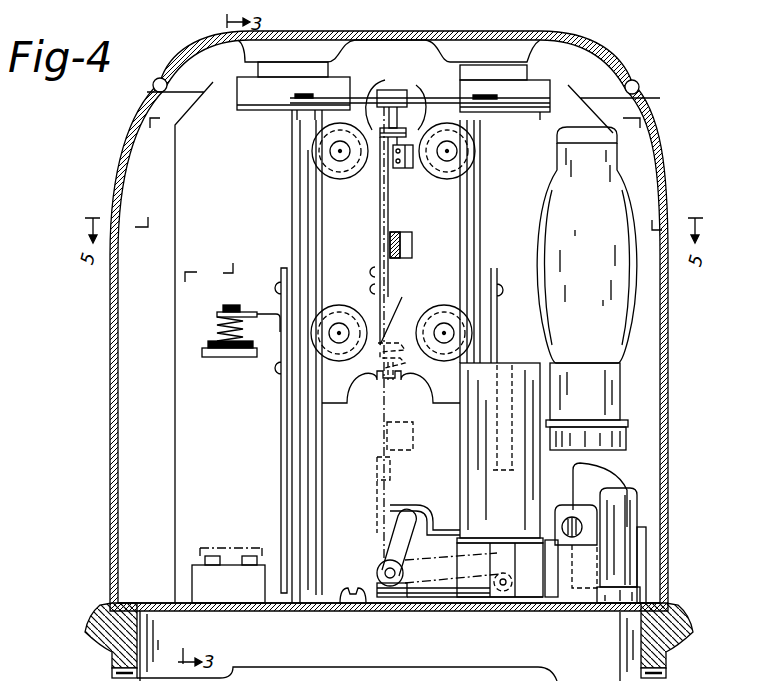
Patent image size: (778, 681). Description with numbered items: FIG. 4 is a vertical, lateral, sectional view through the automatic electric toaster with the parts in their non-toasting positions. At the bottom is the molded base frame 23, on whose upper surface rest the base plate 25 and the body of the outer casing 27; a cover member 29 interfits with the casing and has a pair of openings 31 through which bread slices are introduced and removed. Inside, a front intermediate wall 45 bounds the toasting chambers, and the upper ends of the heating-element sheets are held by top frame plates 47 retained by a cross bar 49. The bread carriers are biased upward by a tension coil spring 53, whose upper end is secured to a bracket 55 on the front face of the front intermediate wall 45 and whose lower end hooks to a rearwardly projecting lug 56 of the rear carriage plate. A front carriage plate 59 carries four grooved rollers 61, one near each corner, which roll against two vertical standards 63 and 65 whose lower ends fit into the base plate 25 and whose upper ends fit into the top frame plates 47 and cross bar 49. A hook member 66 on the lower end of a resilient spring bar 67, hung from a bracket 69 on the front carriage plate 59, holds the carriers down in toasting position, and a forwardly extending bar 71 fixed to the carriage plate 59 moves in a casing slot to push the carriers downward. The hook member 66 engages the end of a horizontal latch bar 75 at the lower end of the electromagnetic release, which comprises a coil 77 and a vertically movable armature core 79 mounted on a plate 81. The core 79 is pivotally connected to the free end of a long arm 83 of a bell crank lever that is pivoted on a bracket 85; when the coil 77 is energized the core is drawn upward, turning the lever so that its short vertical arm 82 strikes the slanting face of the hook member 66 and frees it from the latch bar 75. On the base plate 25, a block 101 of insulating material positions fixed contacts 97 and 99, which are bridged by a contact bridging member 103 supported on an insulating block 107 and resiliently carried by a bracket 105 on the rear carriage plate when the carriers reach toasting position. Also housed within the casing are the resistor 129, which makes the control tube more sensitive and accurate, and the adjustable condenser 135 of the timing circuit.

The base frame 23 is at (670, 660).
The base plate 25 is at (265, 606).
The outer casing 27 is at (110, 368).
The cover member 29 is at (638, 81).
The openings 31 is at (242, 47).
The front intermediate wall 45 is at (175, 438).
The top frame plates 47 is at (240, 112).
The cross bar 49 is at (367, 95).
The tension coil spring 53 is at (416, 105).
The bracket 55 is at (370, 106).
The lug 56 is at (380, 389).
The front carriage plate 59 is at (343, 405).
The grooved rollers 61 is at (312, 152).
The standard 63 is at (290, 222).
The standard 65 is at (484, 201).
The hook member 66 is at (395, 325).
The spring bar 67 is at (380, 206).
The bracket 69 is at (405, 168).
The forwardly extending bar 71 is at (413, 242).
The latch bar 75 is at (420, 517).
The coil 77 is at (460, 473).
The armature core 79 is at (507, 567).
The plate 81 is at (447, 598).
The short vertical arm 82 is at (383, 553).
The long arm 83 is at (425, 590).
The bracket 85 is at (377, 578).
The fixed contact 97 is at (203, 557).
The fixed contact 99 is at (256, 556).
The block 101 is at (192, 588).
The contact bridging member 103 is at (209, 358).
The bracket 105 is at (252, 311).
The block 107 is at (207, 345).
The resistor 129 is at (640, 498).
The adjustable condenser 135 is at (612, 478).